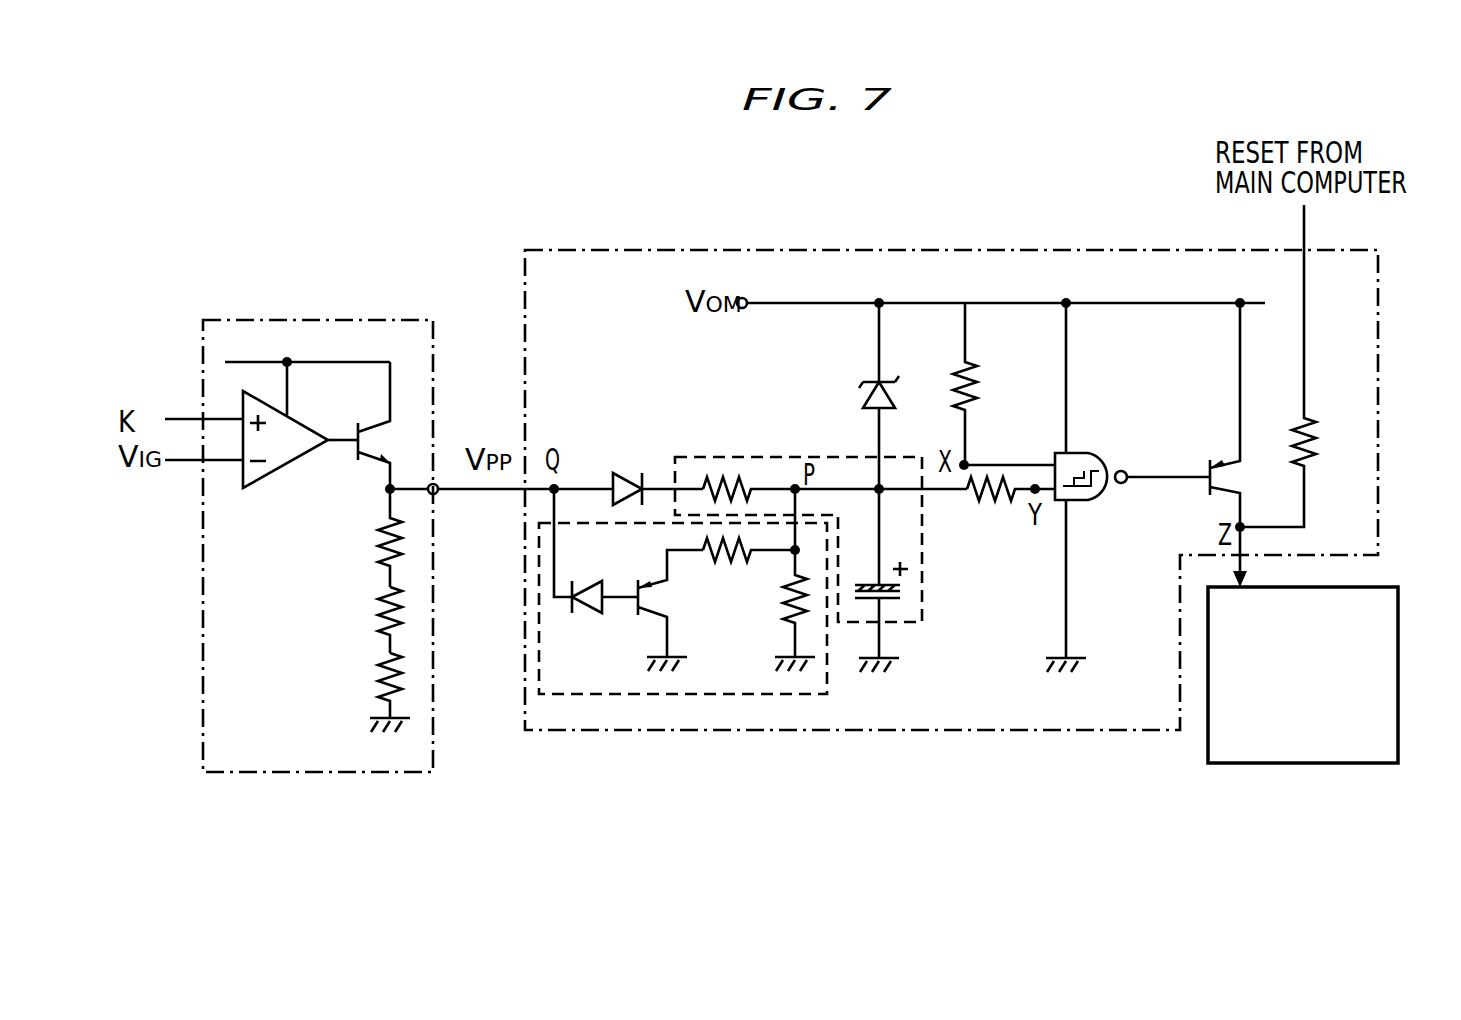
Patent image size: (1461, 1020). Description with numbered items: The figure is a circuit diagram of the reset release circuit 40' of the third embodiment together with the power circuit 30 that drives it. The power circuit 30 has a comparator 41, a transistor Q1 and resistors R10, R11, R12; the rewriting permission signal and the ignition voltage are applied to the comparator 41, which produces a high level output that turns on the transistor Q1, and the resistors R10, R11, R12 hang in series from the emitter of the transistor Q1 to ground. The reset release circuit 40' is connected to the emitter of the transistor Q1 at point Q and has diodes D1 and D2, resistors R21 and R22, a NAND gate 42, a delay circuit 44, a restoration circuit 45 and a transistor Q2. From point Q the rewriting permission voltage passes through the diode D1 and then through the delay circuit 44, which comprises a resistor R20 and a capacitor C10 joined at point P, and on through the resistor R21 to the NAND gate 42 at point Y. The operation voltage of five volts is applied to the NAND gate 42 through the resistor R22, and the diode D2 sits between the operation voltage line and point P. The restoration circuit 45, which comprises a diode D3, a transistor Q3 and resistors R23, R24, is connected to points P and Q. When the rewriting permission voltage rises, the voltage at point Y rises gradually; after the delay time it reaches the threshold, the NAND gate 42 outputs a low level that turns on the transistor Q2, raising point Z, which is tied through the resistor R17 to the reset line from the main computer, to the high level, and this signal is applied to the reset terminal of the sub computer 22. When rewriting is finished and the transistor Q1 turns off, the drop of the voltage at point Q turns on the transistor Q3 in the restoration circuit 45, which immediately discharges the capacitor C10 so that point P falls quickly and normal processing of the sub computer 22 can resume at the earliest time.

The power circuit 30 is at (305, 320).
The comparator 41 is at (282, 470).
The transistor Q1 is at (370, 465).
The resistor R10 is at (381, 535).
The resistor R11 is at (381, 604).
The resistor R12 is at (381, 677).
The reset release circuit 40' is at (951, 461).
The diode D1 is at (624, 472).
The resistor R20 is at (730, 475).
The delay circuit 44 is at (786, 457).
The restoration circuit 45 is at (827, 685).
The diode D3 is at (586, 580).
The transistor Q3 is at (654, 613).
The resistor R24 is at (729, 556).
The resistor R23 is at (786, 595).
The diode D2 is at (868, 402).
The capacitor C10 is at (902, 594).
The resistor R22 is at (980, 384).
The resistor R21 is at (986, 501).
The NAND gate 42 is at (1084, 453).
The transistor Q2 is at (1224, 498).
The resistor R17 is at (1316, 432).
The sub computer 22 is at (1398, 614).